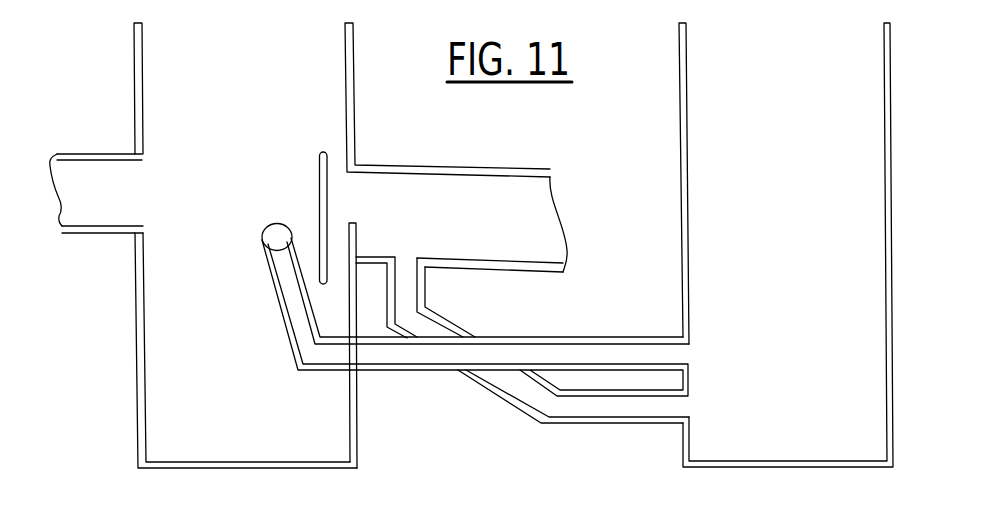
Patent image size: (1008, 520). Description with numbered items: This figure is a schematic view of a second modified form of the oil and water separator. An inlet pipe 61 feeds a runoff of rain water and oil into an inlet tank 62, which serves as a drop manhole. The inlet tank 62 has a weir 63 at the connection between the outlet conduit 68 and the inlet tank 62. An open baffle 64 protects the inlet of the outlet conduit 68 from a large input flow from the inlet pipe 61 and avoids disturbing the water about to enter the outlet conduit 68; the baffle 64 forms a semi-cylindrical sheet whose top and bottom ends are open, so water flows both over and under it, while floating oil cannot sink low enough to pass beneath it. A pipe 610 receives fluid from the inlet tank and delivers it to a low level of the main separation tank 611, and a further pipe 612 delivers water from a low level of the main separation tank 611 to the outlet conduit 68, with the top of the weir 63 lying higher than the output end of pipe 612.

The inlet pipe 61 is at (100, 167).
The inlet tank 62 is at (155, 423).
The weir 63 is at (358, 242).
The open baffle 64 is at (318, 180).
The outlet conduit 68 is at (517, 143).
The pipe 610 is at (397, 357).
The main separation tank 611 is at (708, 430).
The pipe 612 is at (425, 330).